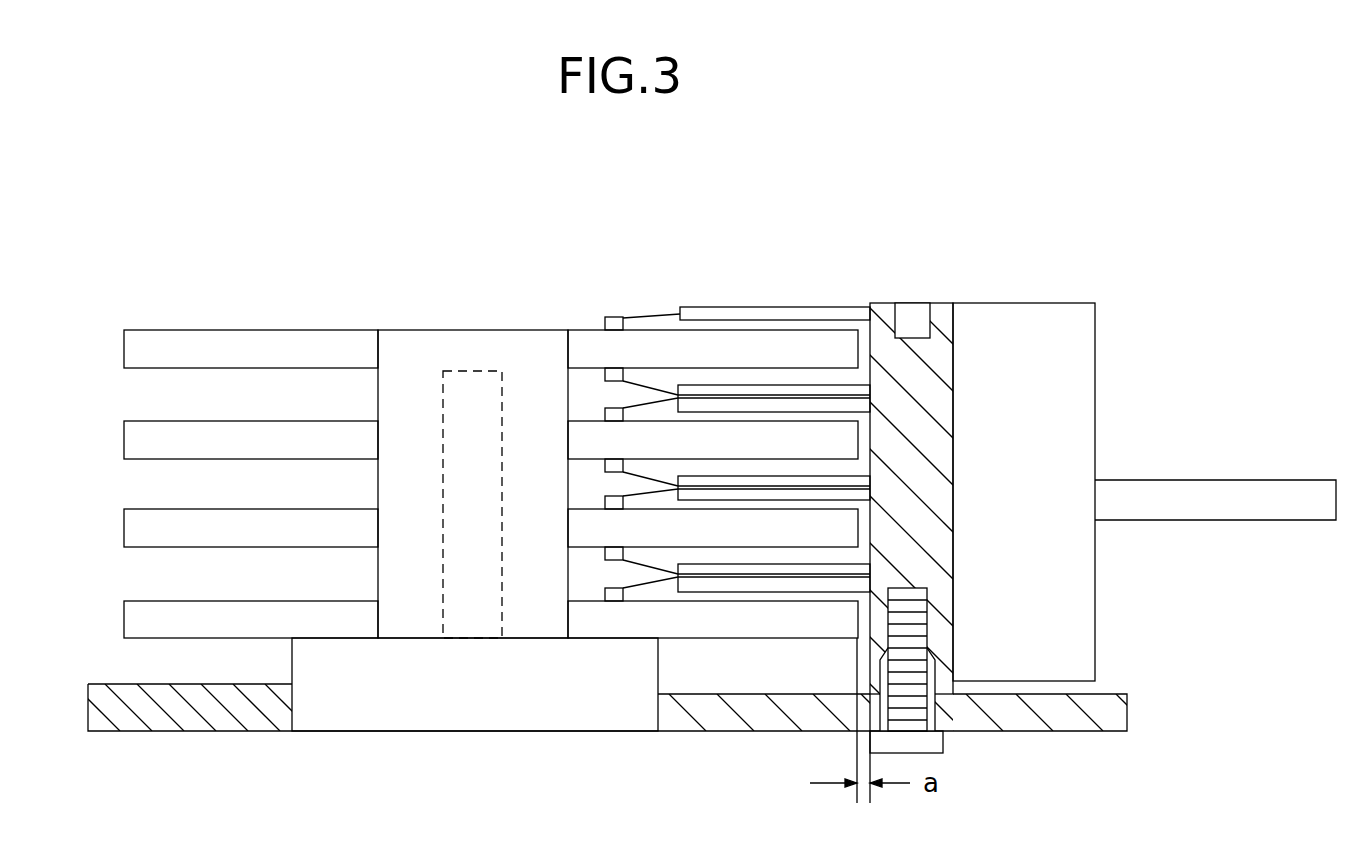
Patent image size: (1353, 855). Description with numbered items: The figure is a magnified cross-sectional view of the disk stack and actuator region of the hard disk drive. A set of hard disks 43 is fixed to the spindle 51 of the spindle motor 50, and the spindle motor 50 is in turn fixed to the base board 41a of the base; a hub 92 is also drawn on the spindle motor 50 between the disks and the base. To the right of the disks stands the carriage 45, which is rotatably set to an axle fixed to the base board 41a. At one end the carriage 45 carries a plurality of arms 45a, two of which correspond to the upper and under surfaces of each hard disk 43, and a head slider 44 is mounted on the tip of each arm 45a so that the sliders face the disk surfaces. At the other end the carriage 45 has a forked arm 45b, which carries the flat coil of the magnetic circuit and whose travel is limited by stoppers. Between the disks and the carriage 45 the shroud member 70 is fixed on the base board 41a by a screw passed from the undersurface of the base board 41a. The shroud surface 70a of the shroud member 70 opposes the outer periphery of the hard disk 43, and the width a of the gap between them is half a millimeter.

The hard disk 43 is at (204, 330).
The hub 92 is at (403, 342).
The spindle 51 is at (470, 371).
The head slider 44 is at (612, 317).
The arm 45a is at (773, 307).
The shroud member 70 is at (920, 303).
The shroud surface 70a is at (870, 322).
The carriage 45 is at (1097, 345).
The forked arm 45b is at (1243, 480).
The spindle motor 50 is at (600, 711).
The base board 41a is at (1052, 733).